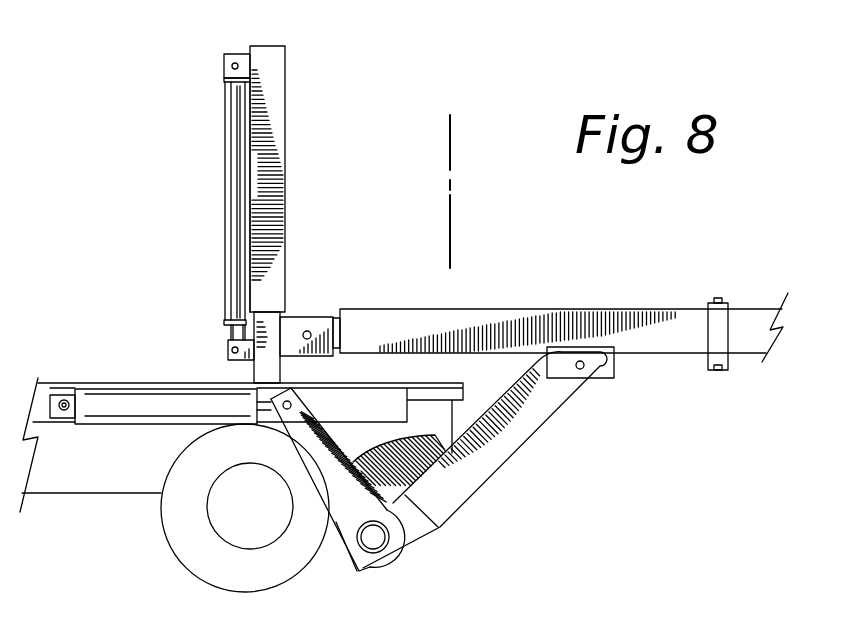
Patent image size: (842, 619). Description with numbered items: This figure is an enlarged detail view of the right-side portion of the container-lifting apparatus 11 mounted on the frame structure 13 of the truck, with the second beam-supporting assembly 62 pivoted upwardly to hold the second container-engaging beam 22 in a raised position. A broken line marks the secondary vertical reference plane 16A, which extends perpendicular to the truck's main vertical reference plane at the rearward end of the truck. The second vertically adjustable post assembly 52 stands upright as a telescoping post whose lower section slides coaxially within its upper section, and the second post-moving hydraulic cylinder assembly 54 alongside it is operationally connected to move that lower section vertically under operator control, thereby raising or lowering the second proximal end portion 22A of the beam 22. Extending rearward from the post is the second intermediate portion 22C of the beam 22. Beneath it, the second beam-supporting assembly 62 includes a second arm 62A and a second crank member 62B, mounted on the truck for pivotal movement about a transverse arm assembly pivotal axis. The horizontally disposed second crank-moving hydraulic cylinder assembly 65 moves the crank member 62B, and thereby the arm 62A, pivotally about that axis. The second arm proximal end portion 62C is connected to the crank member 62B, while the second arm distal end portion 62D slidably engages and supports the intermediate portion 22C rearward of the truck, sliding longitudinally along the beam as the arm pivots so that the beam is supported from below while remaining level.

The container-lifting apparatus 11 is at (228, 53).
The frame structure 13 is at (80, 492).
The secondary vertical reference plane 16A is at (452, 141).
The second container-engaging beam 22 is at (748, 350).
The second proximal end portion 22A is at (345, 313).
The second intermediate portion 22C is at (665, 312).
The second vertically adjustable post assembly 52 is at (278, 117).
The second post-moving hydraulic cylinder assembly 54 is at (233, 177).
The second beam-supporting assembly 62 is at (360, 569).
The second arm 62A is at (518, 448).
The second crank member 62B is at (272, 400).
The second arm proximal end portion 62C is at (407, 535).
The second arm distal end portion 62D is at (585, 370).
The second crank-moving hydraulic cylinder assembly 65 is at (88, 395).